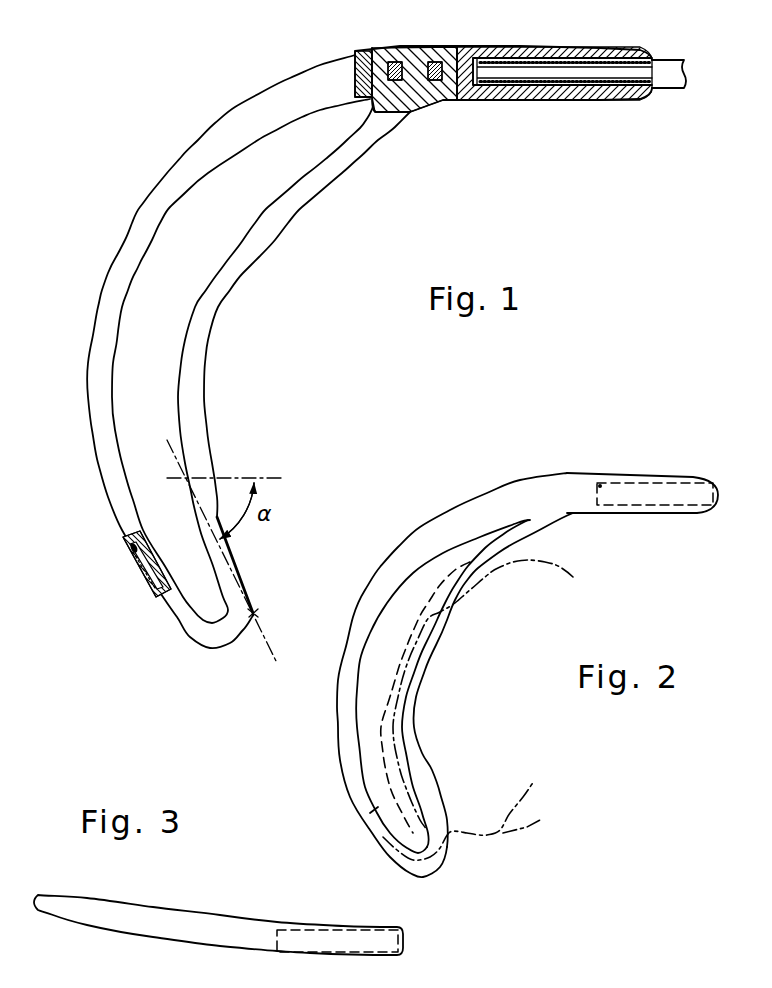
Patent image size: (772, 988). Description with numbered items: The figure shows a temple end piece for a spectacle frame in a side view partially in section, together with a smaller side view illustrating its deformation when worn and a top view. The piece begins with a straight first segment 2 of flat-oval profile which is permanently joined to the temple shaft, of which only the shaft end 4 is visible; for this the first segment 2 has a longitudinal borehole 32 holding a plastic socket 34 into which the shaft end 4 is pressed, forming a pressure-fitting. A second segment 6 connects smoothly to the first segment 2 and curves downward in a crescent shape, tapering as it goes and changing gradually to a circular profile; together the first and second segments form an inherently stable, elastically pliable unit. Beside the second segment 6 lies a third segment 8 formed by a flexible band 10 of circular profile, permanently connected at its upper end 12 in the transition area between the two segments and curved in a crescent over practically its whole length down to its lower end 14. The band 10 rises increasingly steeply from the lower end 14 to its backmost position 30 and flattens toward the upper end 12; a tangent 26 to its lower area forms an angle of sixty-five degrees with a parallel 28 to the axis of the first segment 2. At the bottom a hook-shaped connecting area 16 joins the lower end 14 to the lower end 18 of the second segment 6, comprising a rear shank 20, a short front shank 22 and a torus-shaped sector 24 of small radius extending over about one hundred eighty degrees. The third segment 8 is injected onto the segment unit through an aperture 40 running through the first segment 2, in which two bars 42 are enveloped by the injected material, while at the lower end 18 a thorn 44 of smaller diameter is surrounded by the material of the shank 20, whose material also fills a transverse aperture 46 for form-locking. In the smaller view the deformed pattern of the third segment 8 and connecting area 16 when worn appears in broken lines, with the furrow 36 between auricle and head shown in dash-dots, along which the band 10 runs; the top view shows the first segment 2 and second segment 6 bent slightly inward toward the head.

In FIG. 1, the first segment 2 is at (494, 114).
In FIG. 2, the first segment 2 is at (650, 468).
In FIG. 3, the first segment 2 is at (311, 917).
In FIG. 1, the shaft end 4 is at (670, 66).
In FIG. 1, the second segment 6 is at (117, 241).
In FIG. 2, the second segment 6 is at (382, 555).
In FIG. 3, the second segment 6 is at (97, 897).
In FIG. 1, the third segment 8 is at (304, 242).
In FIG. 2, the third segment 8 is at (421, 702).
In FIG. 1, the flexible band 10 is at (257, 227).
In FIG. 2, the flexible band 10 is at (407, 624).
In FIG. 1, the upper end of band 12 is at (390, 128).
In FIG. 2, the upper end of band 12 is at (537, 523).
In FIG. 1, the lower end of band 14 is at (233, 597).
In FIG. 2, the lower end of band 14 is at (427, 810).
In FIG. 1, the hook-shaped connecting area 16 is at (186, 649).
In FIG. 2, the hook-shaped connecting area 16 is at (441, 875).
In FIG. 1, the lower end of second segment 18 is at (113, 498).
In FIG. 1, the rear shank 20 is at (170, 607).
In FIG. 1, the front shank 22 is at (254, 613).
In FIG. 1, the torus-shaped sector 24 is at (220, 645).
In FIG. 1, the tangent 26 is at (272, 643).
In FIG. 1, the parallel 28 is at (271, 478).
In FIG. 1, the backmost position 30 is at (187, 403).
In FIG. 1, the longitudinal borehole 32 is at (607, 53).
In FIG. 1, the socket 34 is at (597, 85).
In FIG. 2, the furrow 36 is at (478, 710).
In FIG. 1, the aperture 40 is at (463, 55).
In FIG. 1, the bars 42 is at (397, 54).
In FIG. 1, the thorn 44 is at (150, 570).
In FIG. 1, the transverse aperture 46 is at (128, 541).